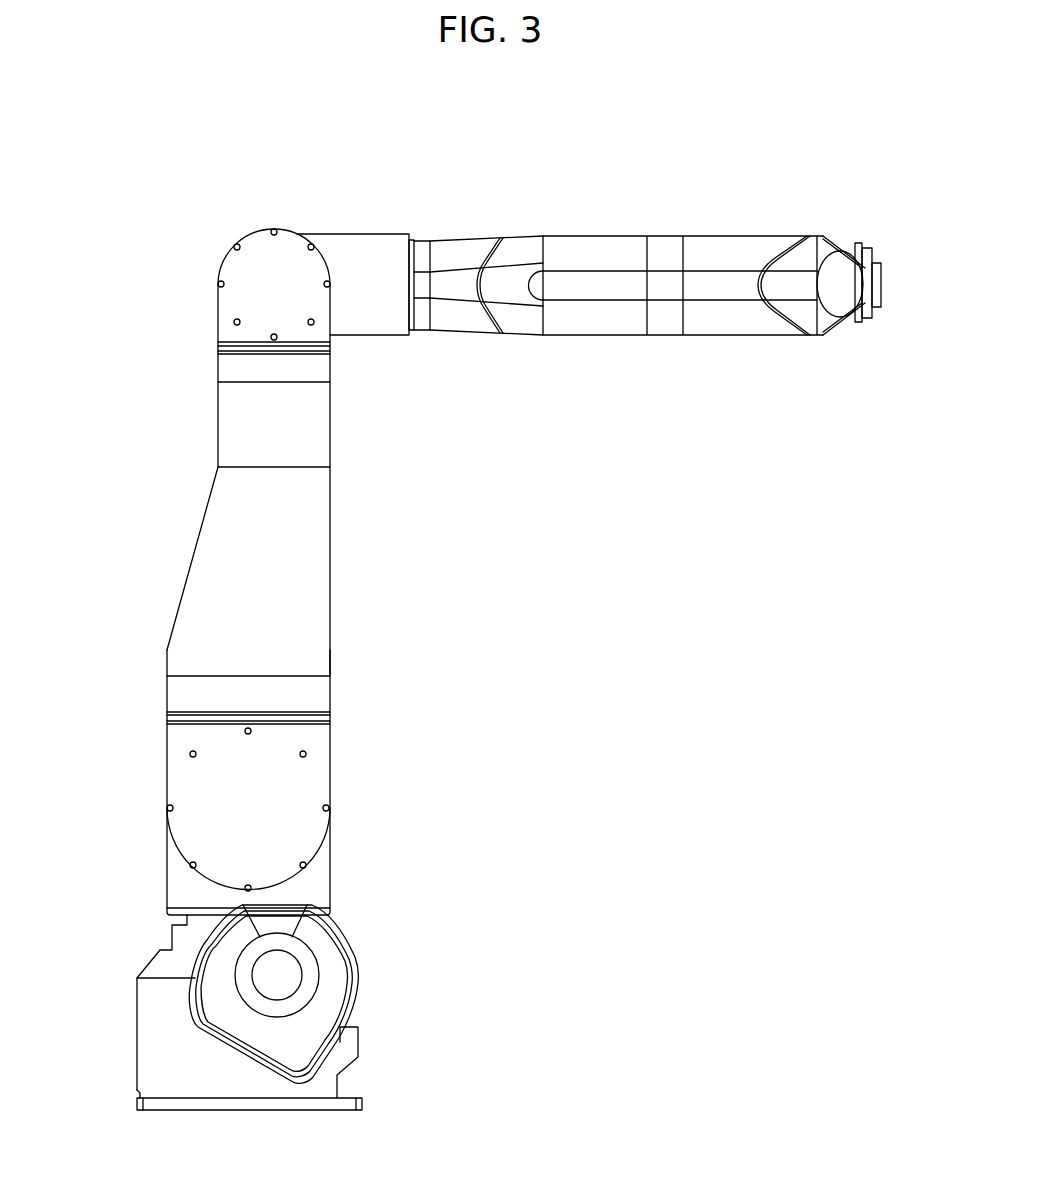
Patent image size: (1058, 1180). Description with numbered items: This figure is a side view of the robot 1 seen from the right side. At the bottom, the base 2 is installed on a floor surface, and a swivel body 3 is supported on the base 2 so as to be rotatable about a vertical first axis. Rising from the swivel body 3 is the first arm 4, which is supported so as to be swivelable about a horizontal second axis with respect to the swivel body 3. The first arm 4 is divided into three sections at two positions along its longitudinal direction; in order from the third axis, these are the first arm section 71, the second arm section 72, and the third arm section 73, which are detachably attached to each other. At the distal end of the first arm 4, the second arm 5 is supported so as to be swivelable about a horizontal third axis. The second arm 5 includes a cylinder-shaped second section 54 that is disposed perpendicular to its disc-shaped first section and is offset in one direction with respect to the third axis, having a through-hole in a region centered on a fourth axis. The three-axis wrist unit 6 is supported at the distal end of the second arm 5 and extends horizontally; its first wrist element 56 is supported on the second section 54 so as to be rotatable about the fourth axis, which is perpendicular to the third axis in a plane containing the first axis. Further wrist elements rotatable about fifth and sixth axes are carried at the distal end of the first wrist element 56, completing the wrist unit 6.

The robot 1 is at (163, 188).
The base 2 is at (137, 1027).
The swivel body 3 is at (167, 866).
The first arm 4 is at (198, 537).
The second arm 5 is at (384, 235).
The wrist unit 6 is at (883, 270).
The second section 54 is at (324, 234).
The first wrist element 56 is at (552, 235).
The first arm section 71 is at (218, 417).
The second arm section 72 is at (181, 600).
The third arm section 73 is at (167, 737).